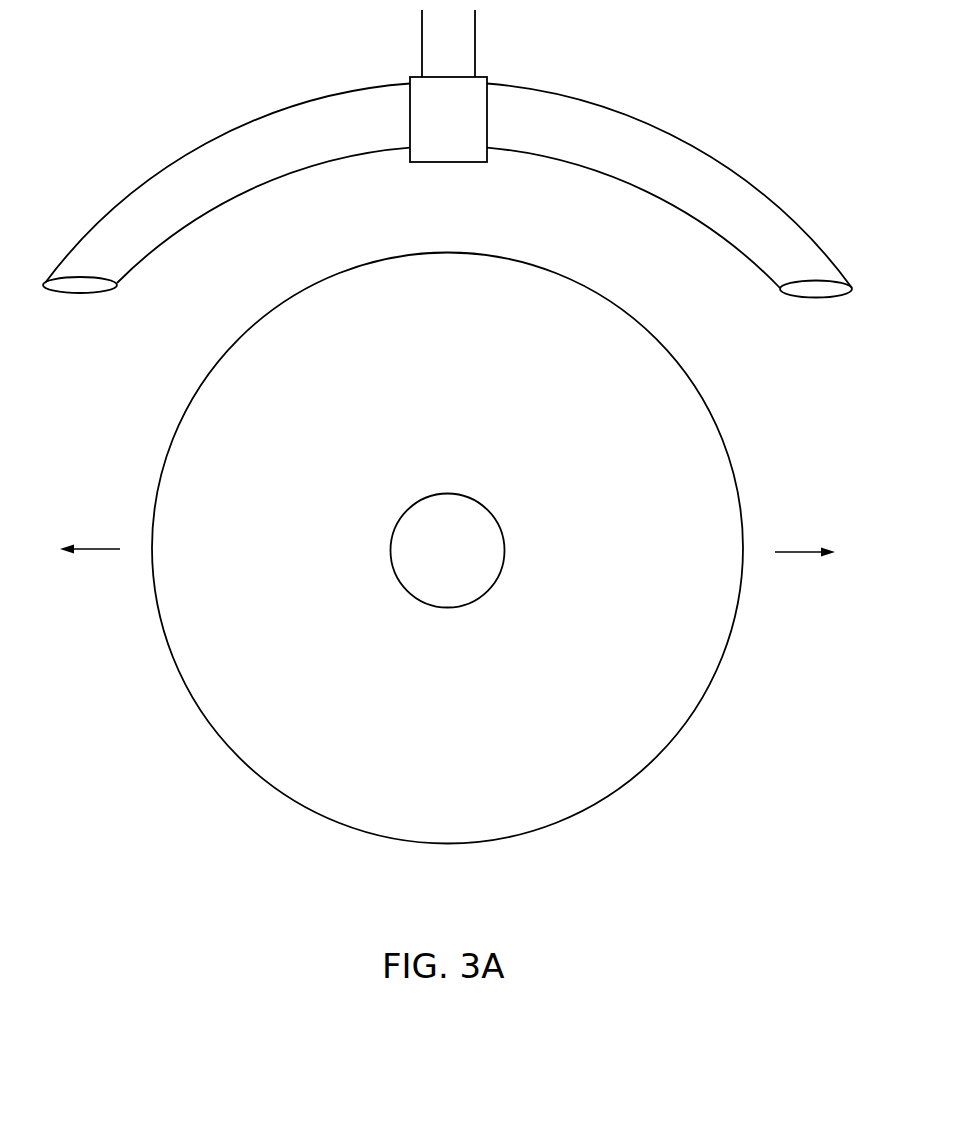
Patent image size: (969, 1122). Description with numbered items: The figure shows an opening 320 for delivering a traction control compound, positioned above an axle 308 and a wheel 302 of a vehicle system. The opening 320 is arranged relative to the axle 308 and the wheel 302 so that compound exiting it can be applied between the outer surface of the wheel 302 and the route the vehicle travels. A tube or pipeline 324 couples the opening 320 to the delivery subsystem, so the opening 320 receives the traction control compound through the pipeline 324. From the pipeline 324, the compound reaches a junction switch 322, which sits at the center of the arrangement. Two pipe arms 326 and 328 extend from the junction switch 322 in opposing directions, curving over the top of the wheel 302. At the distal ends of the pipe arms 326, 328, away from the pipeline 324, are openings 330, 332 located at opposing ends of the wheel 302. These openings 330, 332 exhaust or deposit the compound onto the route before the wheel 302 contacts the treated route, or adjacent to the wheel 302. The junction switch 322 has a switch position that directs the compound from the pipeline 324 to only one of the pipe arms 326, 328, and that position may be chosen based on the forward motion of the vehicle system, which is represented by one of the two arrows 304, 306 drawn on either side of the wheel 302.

The wheel 302 is at (647, 772).
The arrow 304 is at (95, 549).
The arrow 306 is at (803, 552).
The axle 308 is at (505, 548).
The opening 320 is at (447, 219).
The junction switch 322 is at (447, 163).
The pipeline 324 is at (476, 44).
The pipe arm 326 is at (250, 188).
The pipe arm 328 is at (647, 188).
The opening 330 is at (71, 312).
The opening 332 is at (822, 322).